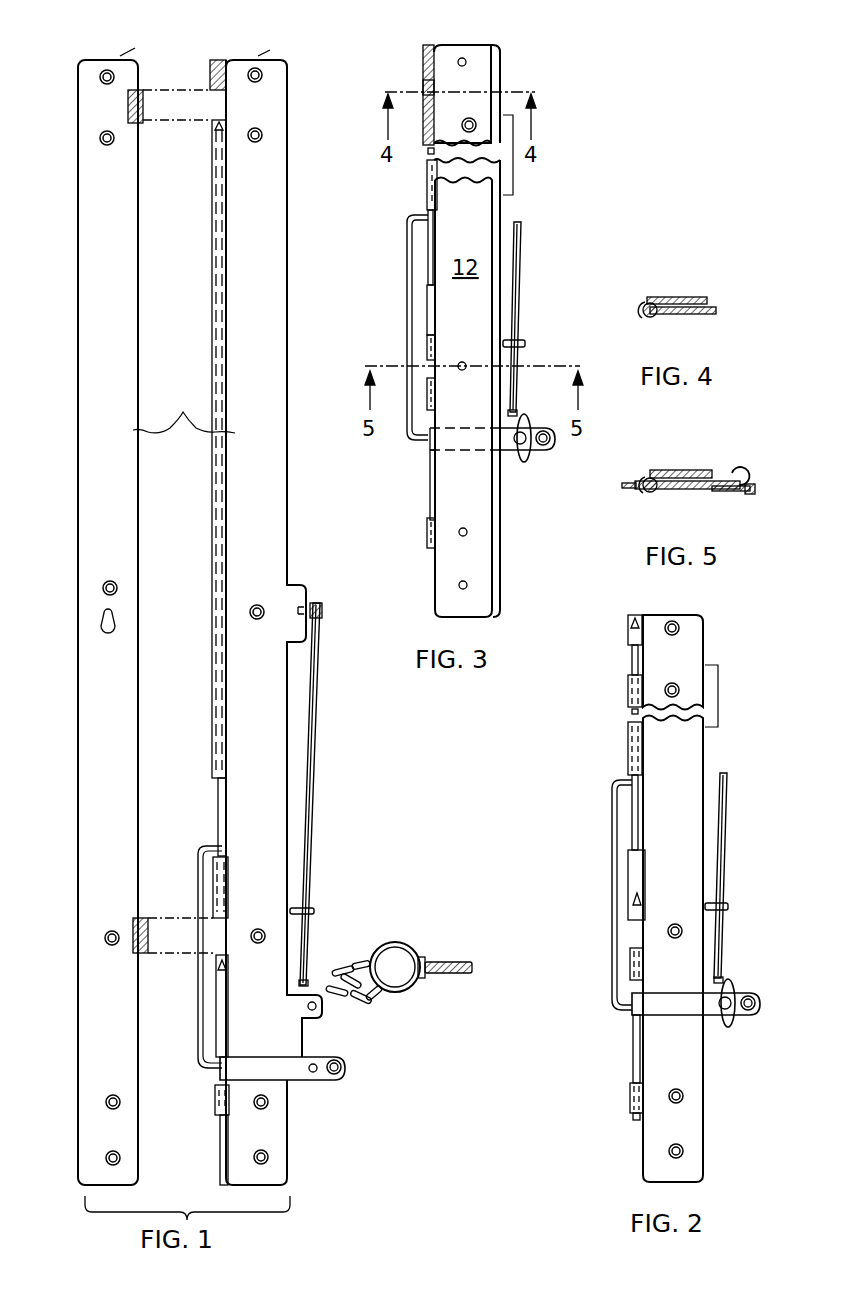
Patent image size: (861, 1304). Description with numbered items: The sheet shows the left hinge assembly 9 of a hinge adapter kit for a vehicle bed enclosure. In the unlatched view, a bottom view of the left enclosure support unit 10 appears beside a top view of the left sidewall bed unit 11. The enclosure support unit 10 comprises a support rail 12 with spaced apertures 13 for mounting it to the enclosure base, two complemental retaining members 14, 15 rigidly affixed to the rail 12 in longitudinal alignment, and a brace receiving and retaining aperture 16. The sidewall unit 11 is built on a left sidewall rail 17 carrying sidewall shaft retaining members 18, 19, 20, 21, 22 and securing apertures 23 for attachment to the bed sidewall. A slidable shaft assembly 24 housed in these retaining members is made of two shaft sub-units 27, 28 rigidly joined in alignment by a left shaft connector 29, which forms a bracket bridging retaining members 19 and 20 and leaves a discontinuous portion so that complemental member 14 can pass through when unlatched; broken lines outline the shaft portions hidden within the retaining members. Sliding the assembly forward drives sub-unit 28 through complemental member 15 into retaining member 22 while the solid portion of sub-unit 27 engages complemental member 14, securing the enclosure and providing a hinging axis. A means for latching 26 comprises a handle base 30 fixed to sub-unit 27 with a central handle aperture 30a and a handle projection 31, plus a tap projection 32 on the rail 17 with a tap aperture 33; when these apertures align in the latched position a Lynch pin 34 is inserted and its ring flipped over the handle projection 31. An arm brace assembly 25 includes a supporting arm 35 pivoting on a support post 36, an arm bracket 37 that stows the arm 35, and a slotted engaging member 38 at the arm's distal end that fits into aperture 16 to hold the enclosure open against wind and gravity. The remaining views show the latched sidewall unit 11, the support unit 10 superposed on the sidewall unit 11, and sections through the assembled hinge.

In FIG. 1, the left hinge assembly 9 is at (184, 409).
In FIG. 3, the left hinge assembly 9 is at (430, 455).
In FIG. 4, the left hinge assembly 9 is at (710, 294).
In FIG. 5, the left hinge assembly 9 is at (662, 462).
In FIG. 1, the left enclosure support unit 10 is at (122, 54).
In FIG. 3, the left enclosure support unit 10 is at (433, 580).
In FIG. 1, the left sidewall bed unit 11 is at (262, 54).
In FIG. 3, the left sidewall bed unit 11 is at (502, 68).
In FIG. 1, the support rail 12 is at (88, 238).
In FIG. 3, the support rail 12 is at (463, 331).
In FIG. 4, the support rail 12 is at (672, 296).
In FIG. 5, the support rail 12 is at (704, 468).
In FIG. 1, the apertures 13 is at (100, 84).
In FIG. 3, the apertures 13 is at (465, 60).
In FIG. 5, the apertures 13 is at (676, 468).
In FIG. 1, the complemental retaining member 14 is at (148, 935).
In FIG. 3, the complemental retaining member 14 is at (427, 354).
In FIG. 5, the complemental retaining member 14 is at (645, 492).
In FIG. 1, the complemental retaining member 15 is at (143, 105).
In FIG. 3, the complemental retaining member 15 is at (423, 86).
In FIG. 4, the complemental retaining member 15 is at (641, 304).
In FIG. 1, the brace receiving and retaining aperture 16 is at (101, 622).
In FIG. 1, the left sidewall rail 17 is at (282, 256).
In FIG. 3, the left sidewall rail 17 is at (502, 205).
In FIG. 4, the left sidewall rail 17 is at (694, 314).
In FIG. 5, the left sidewall rail 17 is at (668, 490).
In FIG. 2, the left sidewall rail 17 is at (705, 658).
In FIG. 1, the sidewall shaft retaining member 18 is at (215, 1100).
In FIG. 3, the sidewall shaft retaining member 18 is at (427, 531).
In FIG. 2, the sidewall shaft retaining member 18 is at (630, 1097).
In FIG. 1, the sidewall shaft retaining member 19 is at (216, 975).
In FIG. 3, the sidewall shaft retaining member 19 is at (427, 392).
In FIG. 2, the sidewall shaft retaining member 19 is at (630, 963).
In FIG. 1, the sidewall shaft retaining member 20 is at (213, 898).
In FIG. 3, the sidewall shaft retaining member 20 is at (427, 332).
In FIG. 2, the sidewall shaft retaining member 20 is at (628, 885).
In FIG. 1, the sidewall shaft retaining member 21 is at (212, 232).
In FIG. 3, the sidewall shaft retaining member 21 is at (425, 118).
In FIG. 2, the sidewall shaft retaining member 21 is at (628, 700).
In FIG. 1, the sidewall shaft retaining member 22 is at (210, 75).
In FIG. 3, the sidewall shaft retaining member 22 is at (423, 60).
In FIG. 2, the sidewall shaft retaining member 22 is at (628, 633).
In FIG. 1, the securing apertures 23 is at (262, 128).
In FIG. 3, the securing apertures 23 is at (476, 124).
In FIG. 5, the securing apertures 23 is at (693, 490).
In FIG. 2, the securing apertures 23 is at (680, 685).
In FIG. 1, the slidable shaft assembly 24 is at (214, 825).
In FIG. 1, the arm brace assembly 25 is at (320, 725).
In FIG. 3, the arm brace assembly 25 is at (520, 300).
In FIG. 1, the means for latching 26 is at (432, 940).
In FIG. 1, the shaft sub-unit 27 is at (220, 1162).
In FIG. 3, the shaft sub-unit 27 is at (430, 485).
In FIG. 5, the shaft sub-unit 27 is at (647, 478).
In FIG. 2, the shaft sub-unit 27 is at (633, 1046).
In FIG. 1, the shaft sub-unit 28 is at (212, 484).
In FIG. 3, the shaft sub-unit 28 is at (428, 254).
In FIG. 4, the shaft sub-unit 28 is at (647, 318).
In FIG. 2, the shaft sub-unit 28 is at (632, 665).
In FIG. 1, the left shaft connector 29 is at (198, 865).
In FIG. 3, the left shaft connector 29 is at (407, 296).
In FIG. 5, the left shaft connector 29 is at (624, 490).
In FIG. 2, the left shaft connector 29 is at (612, 928).
In FIG. 1, the handle base 30 is at (262, 1068).
In FIG. 3, the handle base 30 is at (492, 439).
In FIG. 2, the handle base 30 is at (696, 1004).
In FIG. 1, the handle aperture 30a is at (315, 1073).
In FIG. 1, the handle projection 31 is at (342, 1066).
In FIG. 3, the handle projection 31 is at (547, 448).
In FIG. 2, the handle projection 31 is at (750, 1012).
In FIG. 1, the tap projection 32 is at (298, 1020).
In FIG. 1, the tap aperture 33 is at (325, 1012).
In FIG. 1, the Lynch pin 34 is at (415, 988).
In FIG. 3, the Lynch pin 34 is at (526, 462).
In FIG. 2, the Lynch pin 34 is at (726, 1028).
In FIG. 1, the supporting arm 35 is at (314, 662).
In FIG. 3, the supporting arm 35 is at (522, 240).
In FIG. 5, the supporting arm 35 is at (732, 492).
In FIG. 2, the supporting arm 35 is at (724, 828).
In FIG. 1, the support post 36 is at (322, 612).
In FIG. 5, the support post 36 is at (754, 496).
In FIG. 1, the arm bracket 37 is at (306, 906).
In FIG. 3, the arm bracket 37 is at (525, 340).
In FIG. 5, the arm bracket 37 is at (738, 470).
In FIG. 2, the arm bracket 37 is at (726, 904).
In FIG. 1, the slotted engaging member 38 is at (308, 975).
In FIG. 3, the slotted engaging member 38 is at (518, 416).
In FIG. 2, the slotted engaging member 38 is at (722, 978).